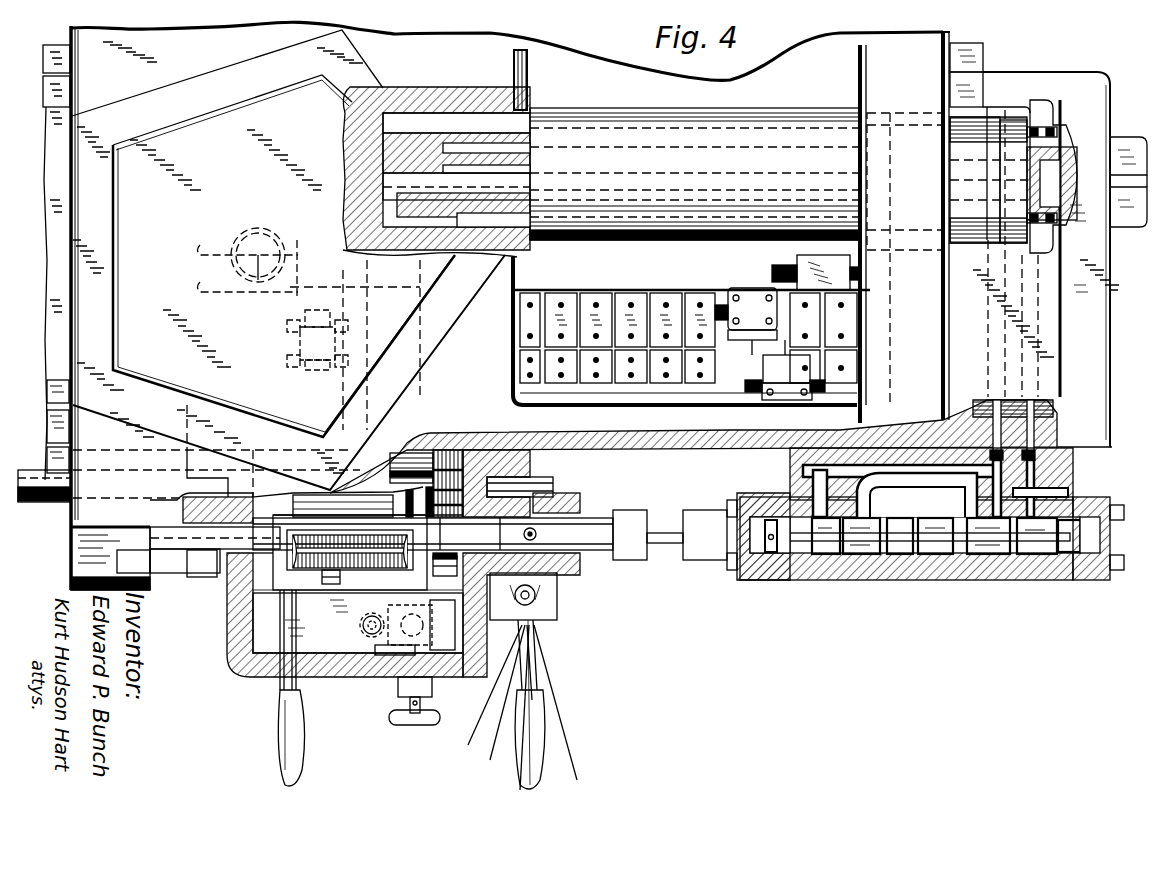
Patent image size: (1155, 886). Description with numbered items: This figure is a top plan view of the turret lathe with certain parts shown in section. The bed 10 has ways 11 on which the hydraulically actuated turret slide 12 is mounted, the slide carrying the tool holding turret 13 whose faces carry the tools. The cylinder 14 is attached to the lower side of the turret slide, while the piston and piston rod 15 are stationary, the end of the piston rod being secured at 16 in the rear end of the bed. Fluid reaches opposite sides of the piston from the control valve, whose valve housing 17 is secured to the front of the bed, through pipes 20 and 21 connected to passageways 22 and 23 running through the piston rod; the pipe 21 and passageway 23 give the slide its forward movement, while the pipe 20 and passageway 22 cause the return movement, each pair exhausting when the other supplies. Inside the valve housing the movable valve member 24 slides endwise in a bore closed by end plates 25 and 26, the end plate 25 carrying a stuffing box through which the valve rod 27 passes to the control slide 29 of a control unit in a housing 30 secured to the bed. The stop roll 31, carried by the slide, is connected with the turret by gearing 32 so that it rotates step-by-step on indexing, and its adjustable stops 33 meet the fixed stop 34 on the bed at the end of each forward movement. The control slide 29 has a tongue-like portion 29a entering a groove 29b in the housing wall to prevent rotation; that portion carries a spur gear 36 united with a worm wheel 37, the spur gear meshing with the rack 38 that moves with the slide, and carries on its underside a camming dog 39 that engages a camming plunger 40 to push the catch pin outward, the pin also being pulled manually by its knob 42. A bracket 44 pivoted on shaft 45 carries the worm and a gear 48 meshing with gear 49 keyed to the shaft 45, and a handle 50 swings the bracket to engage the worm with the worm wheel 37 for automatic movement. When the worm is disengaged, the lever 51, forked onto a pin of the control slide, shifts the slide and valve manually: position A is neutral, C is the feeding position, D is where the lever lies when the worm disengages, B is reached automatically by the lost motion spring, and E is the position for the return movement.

The bed 10 is at (1012, 83).
The ways 11 is at (978, 58).
The turret slide 12 is at (575, 50).
The tool holding turret 13 is at (215, 80).
The cylinder 14 is at (407, 115).
The piston and piston rod 15 is at (425, 140).
The securing point of piston rod 16 is at (1120, 160).
The valve housing 17 is at (962, 580).
The pipe 20 is at (1045, 100).
The pipe 21 is at (1052, 247).
The passageway 22 is at (512, 130).
The passageway 23 is at (508, 235).
The movable valve member 24 is at (772, 565).
The end plate 25 is at (757, 578).
The end plate 26 is at (1105, 498).
The valve rod 27 is at (667, 545).
The control slide 29 is at (595, 516).
The outwardly extending portion 29a is at (335, 655).
The groove 29b is at (383, 655).
The housing 30 is at (232, 628).
The stop roll 31 is at (660, 293).
The gearing 32 is at (290, 295).
The stops 33 is at (805, 262).
The fixed stop 34 is at (258, 270).
The spur gear 36 is at (331, 584).
The worm wheel 37 is at (338, 540).
The rack 38 is at (180, 578).
The camming dog 39 is at (372, 616).
The camming plunger 40 is at (423, 623).
The knob 42 is at (400, 722).
The bracket 44 is at (393, 470).
The shaft 45 is at (555, 477).
The gear 48 is at (447, 577).
The gear 49 is at (445, 450).
The handle 50 is at (305, 750).
The lever 51 is at (548, 636).
The neutral position of lever A is at (537, 672).
The lever position after disengagement B is at (497, 752).
The feeding position of lever C is at (518, 782).
The lever position at worm disengagement D is at (475, 735).
The return position of lever E is at (568, 758).